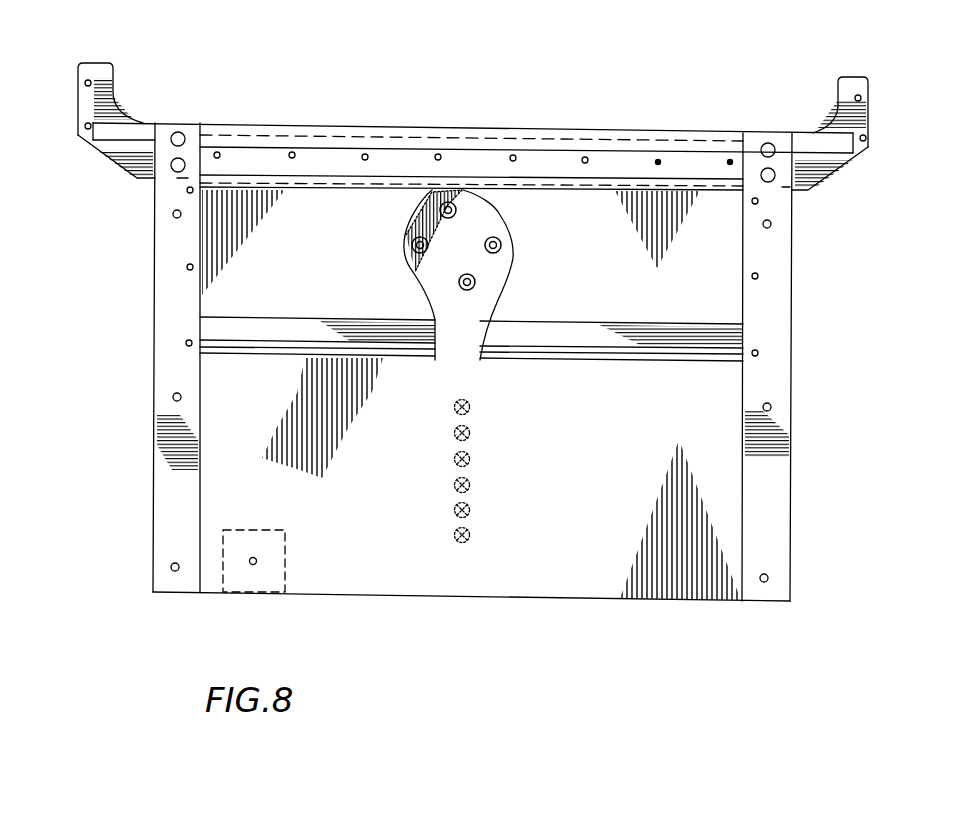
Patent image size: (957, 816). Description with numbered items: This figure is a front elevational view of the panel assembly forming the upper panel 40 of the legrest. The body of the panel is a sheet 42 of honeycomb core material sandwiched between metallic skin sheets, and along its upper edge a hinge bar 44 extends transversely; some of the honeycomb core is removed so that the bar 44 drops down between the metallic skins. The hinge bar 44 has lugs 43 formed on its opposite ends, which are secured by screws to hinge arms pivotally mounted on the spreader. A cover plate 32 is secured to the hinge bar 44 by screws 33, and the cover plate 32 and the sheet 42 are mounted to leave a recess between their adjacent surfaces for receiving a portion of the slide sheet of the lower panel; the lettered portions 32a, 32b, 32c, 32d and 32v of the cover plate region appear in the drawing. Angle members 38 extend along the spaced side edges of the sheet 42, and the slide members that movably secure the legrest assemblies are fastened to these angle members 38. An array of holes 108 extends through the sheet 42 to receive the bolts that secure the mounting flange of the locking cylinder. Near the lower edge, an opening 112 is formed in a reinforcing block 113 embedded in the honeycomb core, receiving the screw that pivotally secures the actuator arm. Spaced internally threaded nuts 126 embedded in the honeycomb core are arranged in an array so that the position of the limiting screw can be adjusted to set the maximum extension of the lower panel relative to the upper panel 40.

The upper panel 40 is at (246, 116).
The lugs 43 is at (114, 103).
The hinge bar 44 is at (346, 133).
The cover plate 32 is at (205, 235).
The fastener hole row 32d is at (523, 160).
The screws 33 is at (730, 162).
The lower flange of top member 32c is at (548, 191).
The array of holes 108 is at (412, 208).
The left cross rail 32v is at (320, 337).
The right cross rail upper edge 32a is at (528, 337).
The right cross rail lower flange 32b is at (625, 337).
The angle members 38 is at (765, 513).
The sheet 42 is at (507, 578).
The internally threaded nuts 126 is at (453, 437).
The opening 112 is at (257, 560).
The reinforcing block 113 is at (258, 580).